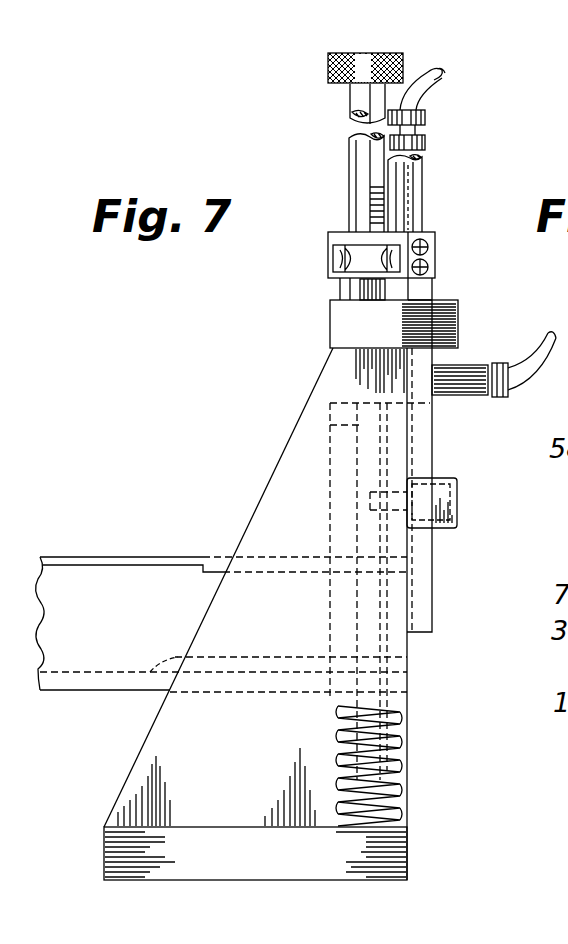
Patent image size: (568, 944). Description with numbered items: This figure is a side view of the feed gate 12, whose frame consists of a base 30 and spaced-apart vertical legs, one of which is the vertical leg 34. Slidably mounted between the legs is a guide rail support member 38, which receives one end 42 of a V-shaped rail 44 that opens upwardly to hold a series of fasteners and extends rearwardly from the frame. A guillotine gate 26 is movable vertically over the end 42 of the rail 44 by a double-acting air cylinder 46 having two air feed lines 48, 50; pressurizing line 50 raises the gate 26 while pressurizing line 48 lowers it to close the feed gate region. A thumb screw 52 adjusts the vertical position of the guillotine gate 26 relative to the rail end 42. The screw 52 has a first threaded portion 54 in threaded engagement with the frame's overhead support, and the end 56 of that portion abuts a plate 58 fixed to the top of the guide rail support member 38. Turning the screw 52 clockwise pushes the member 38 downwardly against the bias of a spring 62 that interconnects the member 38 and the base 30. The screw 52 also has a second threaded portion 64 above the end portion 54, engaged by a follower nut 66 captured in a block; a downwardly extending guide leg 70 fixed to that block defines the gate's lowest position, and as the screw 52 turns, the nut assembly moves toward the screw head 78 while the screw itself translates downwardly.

The feed gate 12 is at (258, 474).
The guillotine gate 26 is at (422, 566).
The base 30 is at (403, 854).
The vertical leg 34 is at (180, 768).
The guide rail support member 38 is at (146, 680).
The end of rail 42 is at (407, 682).
The rail 44 is at (98, 556).
The double-acting air cylinder 46 is at (425, 187).
The air feed line 48 is at (422, 98).
The air feed line 50 is at (534, 387).
The thumb screw 52 is at (350, 161).
The first threaded portion 54 is at (358, 285).
The end of first threaded portion 56 is at (328, 423).
The plate 58 is at (466, 362).
The spring 62 is at (400, 742).
The second threaded portion 64 is at (348, 211).
The follower nut 66 is at (430, 213).
The guide leg 70 is at (417, 358).
The screw head 78 is at (328, 70).